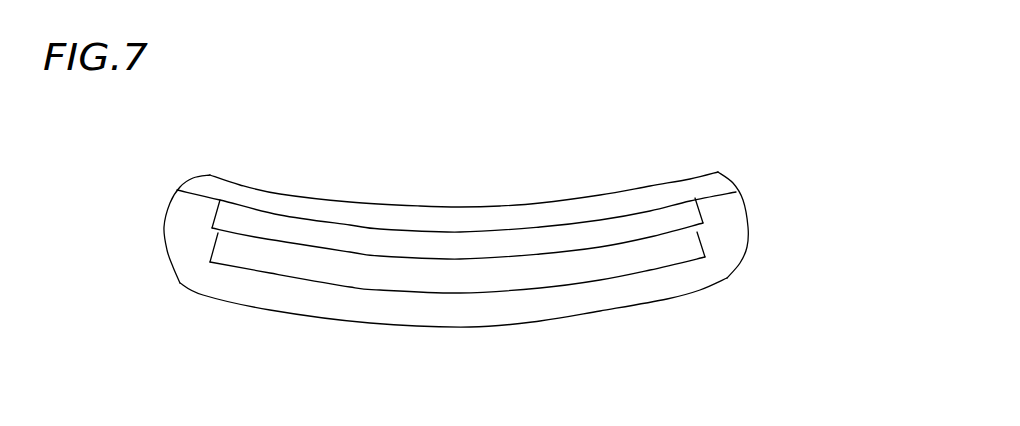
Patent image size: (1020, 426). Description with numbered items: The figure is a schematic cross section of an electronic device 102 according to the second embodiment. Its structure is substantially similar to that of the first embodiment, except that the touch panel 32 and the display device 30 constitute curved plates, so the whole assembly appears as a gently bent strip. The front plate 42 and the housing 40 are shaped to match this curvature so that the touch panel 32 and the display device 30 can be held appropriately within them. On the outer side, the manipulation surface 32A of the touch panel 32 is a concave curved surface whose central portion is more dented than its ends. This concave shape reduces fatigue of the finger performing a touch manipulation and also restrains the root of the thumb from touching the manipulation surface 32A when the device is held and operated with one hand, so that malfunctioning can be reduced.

The electronic device 102 is at (733, 90).
The display device 30 is at (692, 246).
The touch panel 32 is at (683, 212).
The manipulation surface 32A is at (565, 200).
The housing 40 is at (720, 275).
The front plate 42 is at (703, 183).